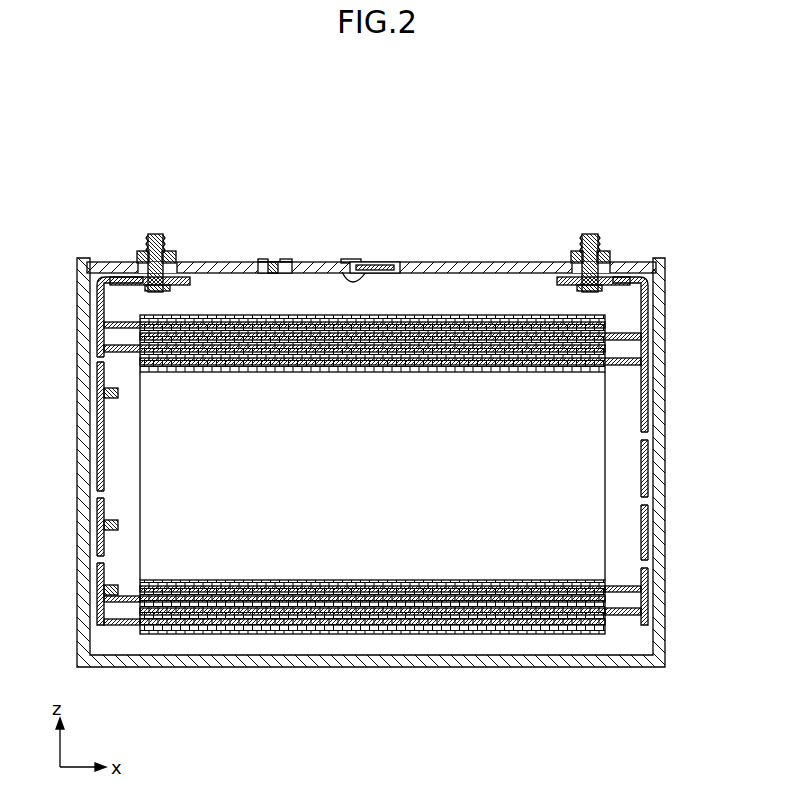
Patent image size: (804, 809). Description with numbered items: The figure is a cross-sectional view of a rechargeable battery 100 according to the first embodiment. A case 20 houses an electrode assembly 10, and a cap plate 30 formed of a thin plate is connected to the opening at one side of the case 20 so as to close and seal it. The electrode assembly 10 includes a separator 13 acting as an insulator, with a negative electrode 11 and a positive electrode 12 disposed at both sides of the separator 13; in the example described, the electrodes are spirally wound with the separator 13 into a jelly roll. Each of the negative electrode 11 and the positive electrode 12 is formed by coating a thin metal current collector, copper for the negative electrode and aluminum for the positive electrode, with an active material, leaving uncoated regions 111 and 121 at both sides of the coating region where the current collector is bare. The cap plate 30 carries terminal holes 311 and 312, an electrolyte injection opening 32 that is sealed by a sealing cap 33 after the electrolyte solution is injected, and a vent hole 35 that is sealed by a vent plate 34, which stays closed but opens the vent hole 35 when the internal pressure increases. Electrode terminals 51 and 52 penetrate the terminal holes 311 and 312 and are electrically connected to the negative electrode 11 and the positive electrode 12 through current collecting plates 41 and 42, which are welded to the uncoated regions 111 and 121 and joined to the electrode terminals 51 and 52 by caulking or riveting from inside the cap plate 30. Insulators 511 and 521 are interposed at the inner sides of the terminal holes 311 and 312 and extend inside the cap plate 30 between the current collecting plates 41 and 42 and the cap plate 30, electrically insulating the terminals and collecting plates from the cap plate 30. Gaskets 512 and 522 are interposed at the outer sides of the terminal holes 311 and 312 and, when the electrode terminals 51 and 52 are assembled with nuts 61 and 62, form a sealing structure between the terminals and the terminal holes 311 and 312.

The rechargeable battery 100 is at (396, 88).
The electrode assembly 10 is at (372, 528).
The negative electrode 11 is at (354, 666).
The uncoated region 111 is at (120, 628).
The positive electrode 12 is at (390, 659).
The uncoated region 121 is at (621, 620).
The separator 13 is at (375, 606).
The case 20 is at (476, 666).
The cap plate 30 is at (464, 262).
The terminal hole 311 is at (178, 264).
The terminal hole 312 is at (570, 262).
The electrolyte injection opening 32 is at (289, 262).
The sealing cap 33 is at (272, 262).
The vent plate 34 is at (386, 264).
The vent hole 35 is at (345, 264).
The current collecting plate 41 is at (97, 338).
The current collecting plate 42 is at (648, 348).
The electrode terminal 51 is at (157, 233).
The insulator 511 is at (104, 283).
The gasket 512 is at (146, 252).
The electrode terminal 52 is at (590, 233).
The insulator 521 is at (630, 284).
The gasket 522 is at (604, 252).
The nut 61 is at (170, 252).
The nut 62 is at (574, 252).